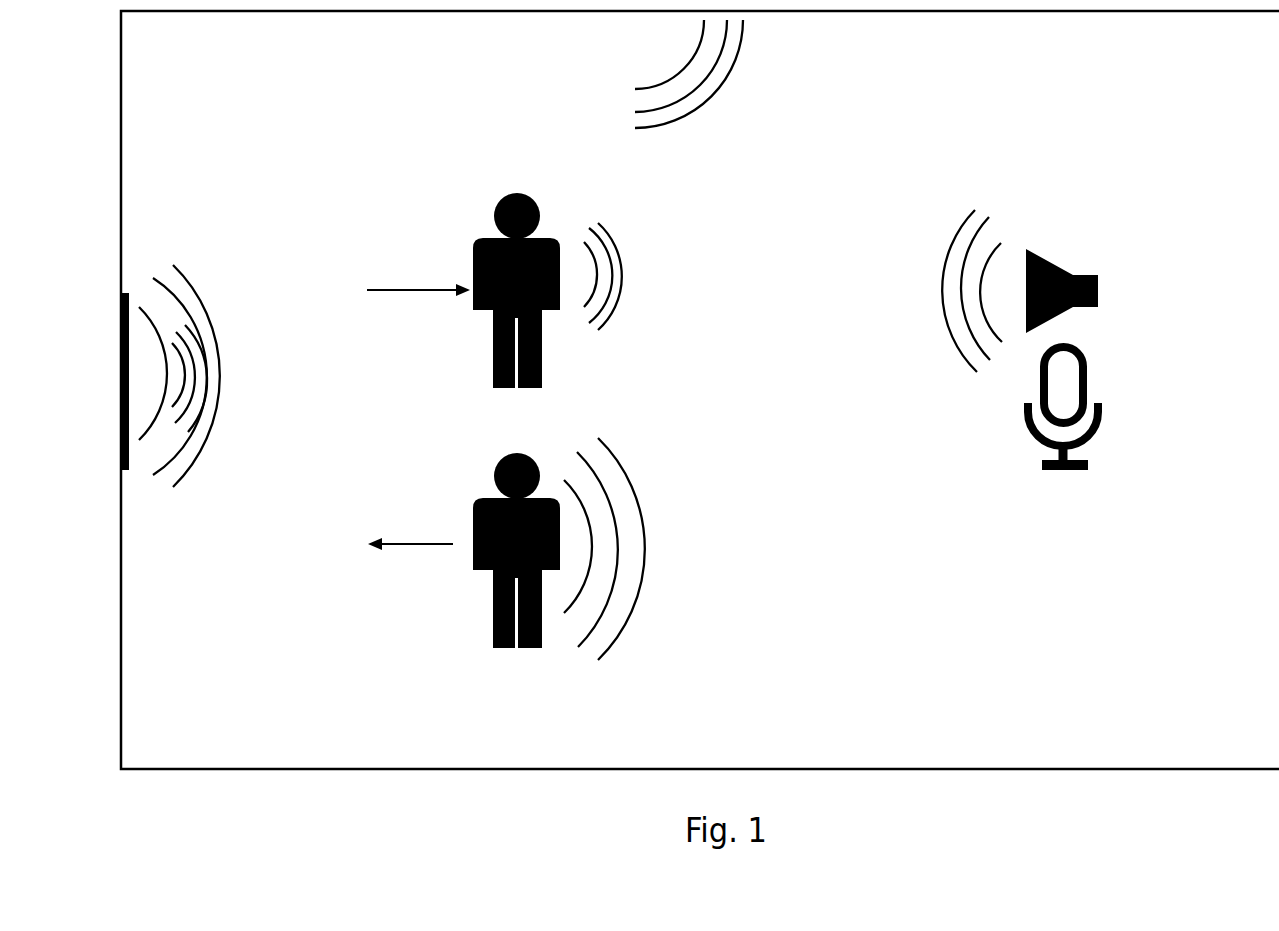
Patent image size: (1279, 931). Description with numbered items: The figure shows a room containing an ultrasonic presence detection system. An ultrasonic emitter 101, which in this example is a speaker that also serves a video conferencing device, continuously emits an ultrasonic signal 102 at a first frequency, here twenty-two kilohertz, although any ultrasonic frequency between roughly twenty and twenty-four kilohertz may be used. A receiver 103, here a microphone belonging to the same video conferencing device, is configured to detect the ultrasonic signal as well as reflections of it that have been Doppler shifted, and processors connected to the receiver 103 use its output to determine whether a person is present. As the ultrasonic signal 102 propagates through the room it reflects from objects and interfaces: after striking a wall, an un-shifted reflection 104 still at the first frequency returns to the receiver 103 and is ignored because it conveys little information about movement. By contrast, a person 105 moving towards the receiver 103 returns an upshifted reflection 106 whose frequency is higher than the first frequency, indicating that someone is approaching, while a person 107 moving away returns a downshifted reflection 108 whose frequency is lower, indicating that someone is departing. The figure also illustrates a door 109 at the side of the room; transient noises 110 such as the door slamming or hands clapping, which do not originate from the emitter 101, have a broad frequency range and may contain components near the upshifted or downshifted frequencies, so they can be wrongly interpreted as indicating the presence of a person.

The ultrasonic emitter 101 is at (1073, 273).
The ultrasonic signal 102 is at (997, 203).
The receiver 103 is at (1102, 412).
The un-shifted reflection 104 is at (742, 45).
The person 105 is at (495, 210).
The upshifted reflection 106 is at (622, 272).
The person 107 is at (495, 628).
The downshifted reflection 108 is at (643, 547).
The door 109 is at (120, 327).
The transient noises 110 is at (194, 273).